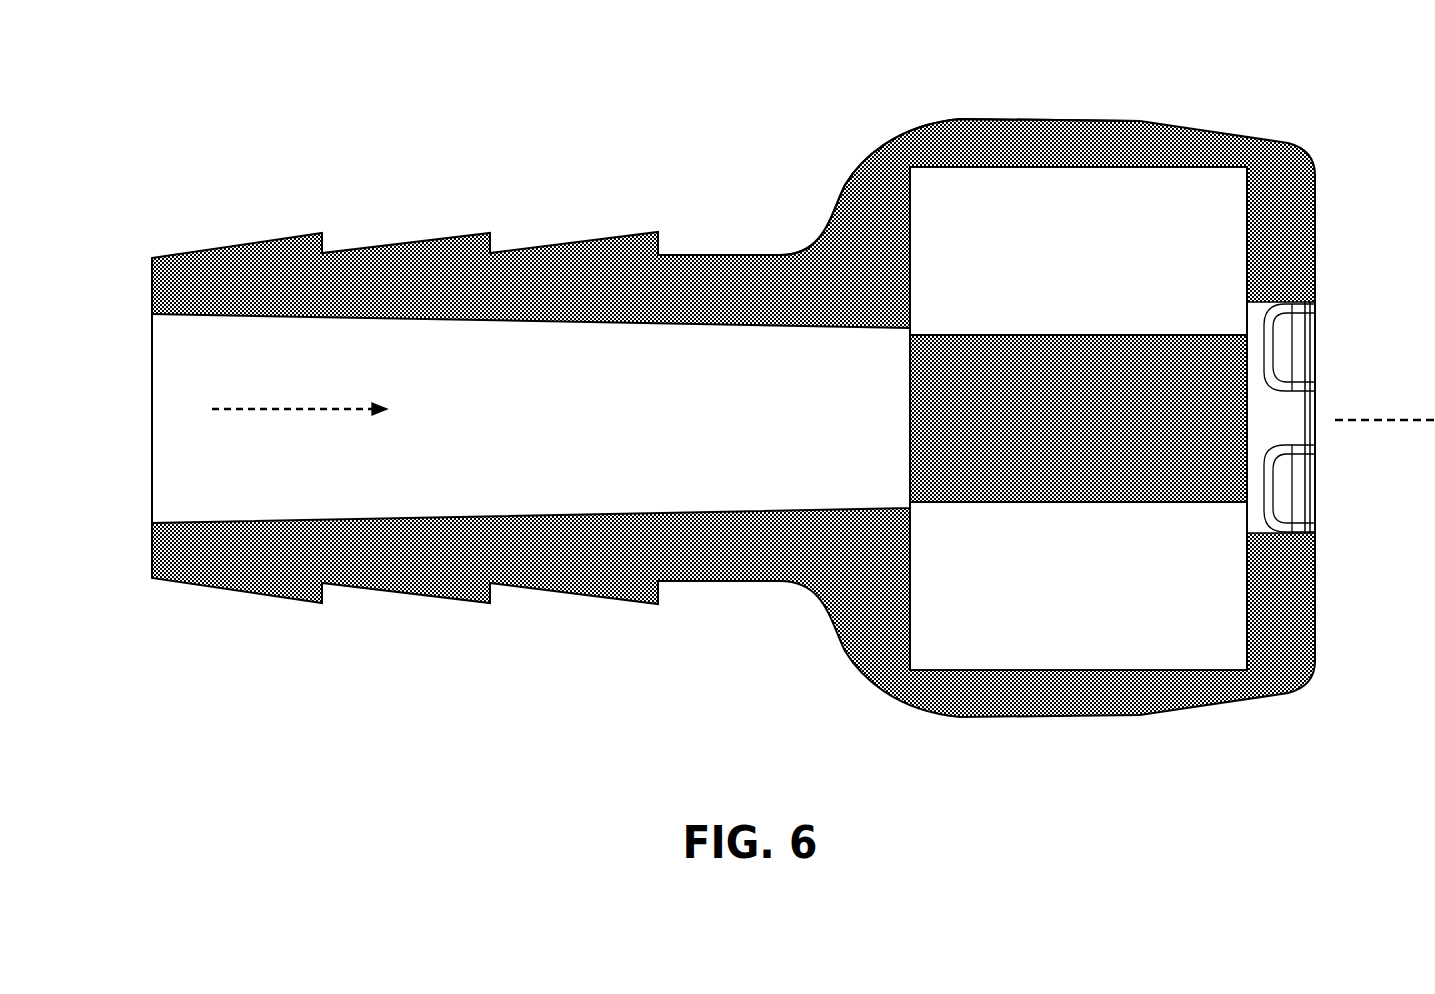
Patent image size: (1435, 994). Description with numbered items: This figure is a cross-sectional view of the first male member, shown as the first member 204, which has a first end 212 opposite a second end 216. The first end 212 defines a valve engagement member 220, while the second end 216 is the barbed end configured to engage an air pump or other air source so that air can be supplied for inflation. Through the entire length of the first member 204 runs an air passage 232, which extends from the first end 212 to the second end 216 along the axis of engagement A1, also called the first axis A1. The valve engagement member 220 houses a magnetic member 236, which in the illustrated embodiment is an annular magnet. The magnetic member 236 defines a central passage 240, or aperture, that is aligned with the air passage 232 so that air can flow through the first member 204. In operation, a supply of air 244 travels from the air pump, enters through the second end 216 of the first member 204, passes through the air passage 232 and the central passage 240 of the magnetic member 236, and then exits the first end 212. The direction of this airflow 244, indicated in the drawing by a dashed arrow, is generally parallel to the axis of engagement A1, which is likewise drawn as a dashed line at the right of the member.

The first member 204 is at (688, 175).
The first end 212 is at (1317, 223).
The second end 216 is at (152, 280).
The valve engagement member 220 is at (968, 117).
The air passage 232 is at (509, 372).
The magnetic member 236 is at (1168, 212).
The central passage 240 is at (1107, 467).
The supply of air 244 is at (290, 418).
The axis of engagement A1 is at (1424, 422).